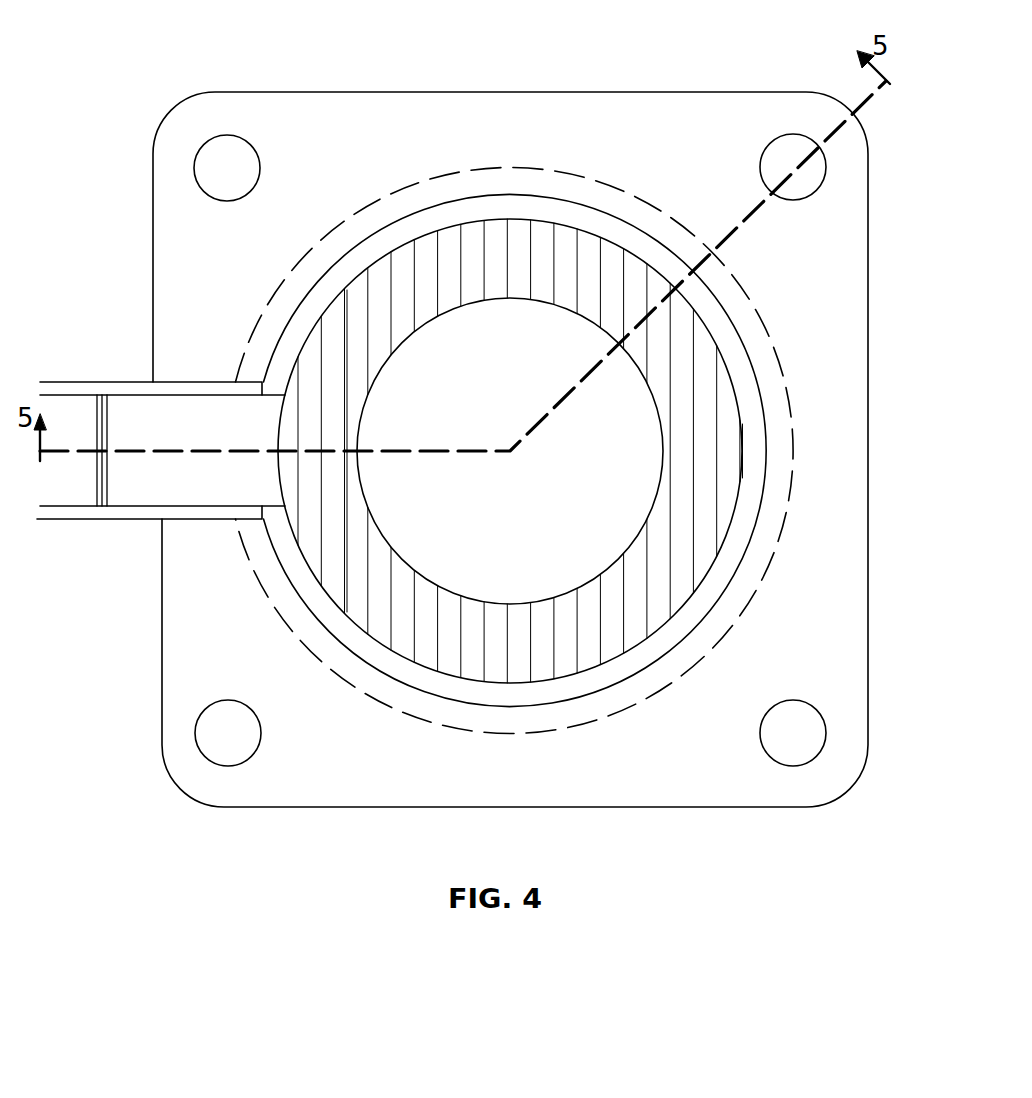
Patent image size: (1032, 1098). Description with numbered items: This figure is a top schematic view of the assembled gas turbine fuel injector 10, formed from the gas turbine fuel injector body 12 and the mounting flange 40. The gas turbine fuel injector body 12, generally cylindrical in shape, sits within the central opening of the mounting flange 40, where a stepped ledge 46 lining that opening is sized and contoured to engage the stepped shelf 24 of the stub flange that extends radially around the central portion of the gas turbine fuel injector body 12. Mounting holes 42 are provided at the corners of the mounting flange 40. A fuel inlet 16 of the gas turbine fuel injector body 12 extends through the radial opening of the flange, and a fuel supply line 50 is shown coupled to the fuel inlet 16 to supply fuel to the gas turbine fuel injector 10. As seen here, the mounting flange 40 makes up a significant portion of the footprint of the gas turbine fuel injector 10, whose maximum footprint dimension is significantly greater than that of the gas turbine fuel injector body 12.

The gas turbine fuel injector 10 is at (309, 833).
The gas turbine fuel injector body 12 is at (702, 366).
The fuel inlet 16 is at (177, 452).
The stepped shelf 24 is at (780, 469).
The mounting flange 40 is at (693, 122).
The mounting holes 42 is at (242, 155).
The stepped ledge 46 is at (272, 580).
The fuel supply line 50 is at (67, 437).